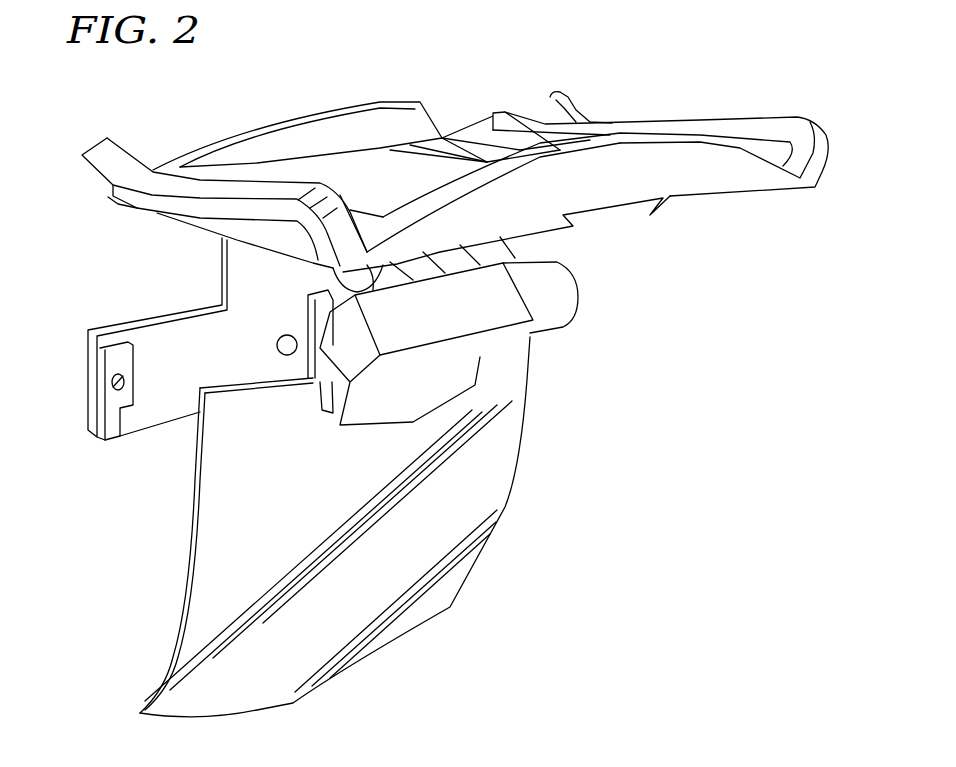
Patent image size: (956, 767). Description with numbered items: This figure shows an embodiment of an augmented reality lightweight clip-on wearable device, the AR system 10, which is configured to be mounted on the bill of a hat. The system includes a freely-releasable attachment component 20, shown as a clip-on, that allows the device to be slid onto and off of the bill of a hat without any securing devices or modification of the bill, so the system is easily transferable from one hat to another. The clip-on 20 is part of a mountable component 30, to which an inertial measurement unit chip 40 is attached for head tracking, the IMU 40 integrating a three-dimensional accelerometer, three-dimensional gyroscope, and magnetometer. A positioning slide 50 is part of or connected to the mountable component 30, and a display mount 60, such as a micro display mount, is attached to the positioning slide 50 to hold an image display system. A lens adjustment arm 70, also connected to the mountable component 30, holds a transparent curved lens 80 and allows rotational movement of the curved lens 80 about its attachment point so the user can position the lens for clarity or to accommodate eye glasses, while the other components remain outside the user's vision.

The AR system 10 is at (702, 43).
The attachment component 20 is at (263, 185).
The mountable component 30 is at (350, 100).
The inertial measurement unit chip 40 is at (480, 152).
The positioning slide 50 is at (598, 208).
The display mount 60 is at (158, 423).
The lens adjustment arm 70 is at (577, 294).
The curved lens 80 is at (513, 470).